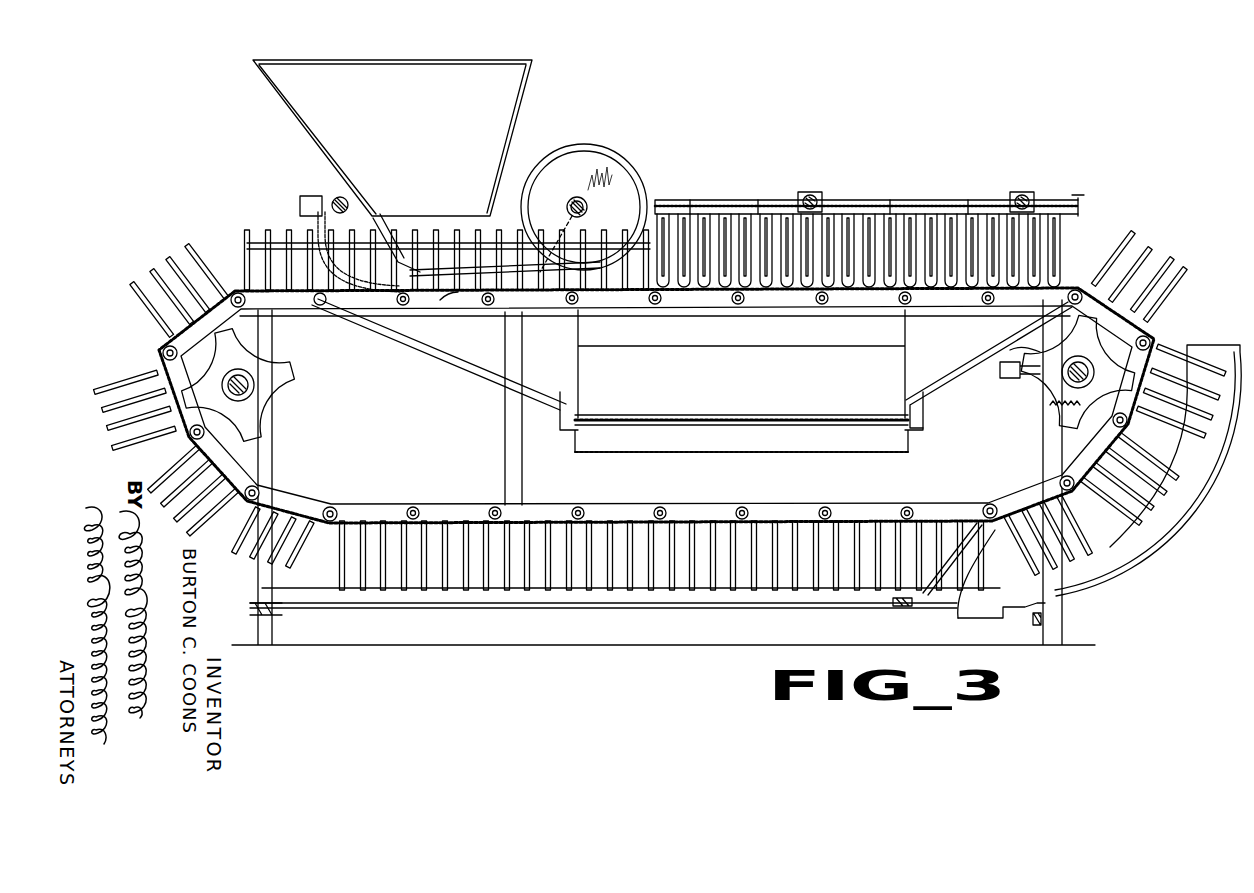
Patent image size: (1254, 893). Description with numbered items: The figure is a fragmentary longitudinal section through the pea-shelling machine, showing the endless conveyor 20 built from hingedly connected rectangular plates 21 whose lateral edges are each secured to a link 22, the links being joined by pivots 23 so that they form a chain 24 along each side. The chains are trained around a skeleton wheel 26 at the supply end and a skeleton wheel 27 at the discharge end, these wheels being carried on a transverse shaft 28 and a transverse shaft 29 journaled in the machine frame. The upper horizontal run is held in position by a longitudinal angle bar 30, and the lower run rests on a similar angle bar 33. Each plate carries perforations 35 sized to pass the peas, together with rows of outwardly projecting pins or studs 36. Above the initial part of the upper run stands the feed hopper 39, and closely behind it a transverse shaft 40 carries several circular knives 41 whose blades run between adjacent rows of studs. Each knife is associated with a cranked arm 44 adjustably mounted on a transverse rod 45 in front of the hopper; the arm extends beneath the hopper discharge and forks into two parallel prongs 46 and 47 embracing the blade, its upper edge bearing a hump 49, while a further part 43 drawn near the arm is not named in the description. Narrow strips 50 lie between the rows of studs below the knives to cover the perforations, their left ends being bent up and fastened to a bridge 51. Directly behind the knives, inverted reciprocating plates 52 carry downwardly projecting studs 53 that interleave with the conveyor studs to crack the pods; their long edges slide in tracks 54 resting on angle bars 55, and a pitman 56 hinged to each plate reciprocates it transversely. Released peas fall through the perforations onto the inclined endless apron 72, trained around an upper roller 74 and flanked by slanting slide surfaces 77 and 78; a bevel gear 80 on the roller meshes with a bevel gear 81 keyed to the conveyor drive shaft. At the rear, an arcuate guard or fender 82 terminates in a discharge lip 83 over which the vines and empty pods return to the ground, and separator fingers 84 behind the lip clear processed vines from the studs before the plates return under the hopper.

The endless conveyor 20 is at (1082, 290).
The conveyor plates 21 is at (178, 355).
The link 22 is at (300, 295).
The pivots 23 is at (238, 308).
The chain 24 is at (645, 520).
The star or skeleton wheel 26 is at (282, 380).
The star or skeleton wheel 27 is at (1040, 395).
The transverse shaft 28 is at (255, 390).
The transverse shaft 29 is at (1062, 378).
The angle bar 30 is at (800, 310).
The angle bar 33 is at (255, 530).
The perforations 35 is at (520, 300).
The pins or studs 36 is at (155, 300).
The feed hopper 39 is at (455, 72).
The transverse shaft 40 is at (585, 198).
The circular knives 41 is at (562, 160).
The trough plate 43 is at (505, 267).
The cranked arm 44 is at (385, 232).
The transverse rod 45 is at (320, 212).
The prong 46 is at (505, 268).
The prong 47 is at (555, 240).
The hump 49 is at (560, 200).
The strips 50 is at (448, 304).
The bridge 51 is at (324, 196).
The reciprocating plates 52 is at (677, 206).
The studs 53 is at (752, 206).
The tracks 54 is at (690, 206).
The angle bars 55 is at (1084, 204).
The connecting rod or pitman 56 is at (810, 192).
The endless apron 72 is at (693, 452).
The upper roller 74 is at (1011, 342).
The slanting slide surface 77 is at (470, 365).
The slanting slide surface 78 is at (965, 395).
The bevel gear 80 is at (1020, 370).
The bevel gear 81 is at (1040, 415).
The arcuate guard or fender 82 is at (1232, 345).
The discharge lip 83 is at (960, 615).
The separator prongs or fingers 84 is at (952, 559).